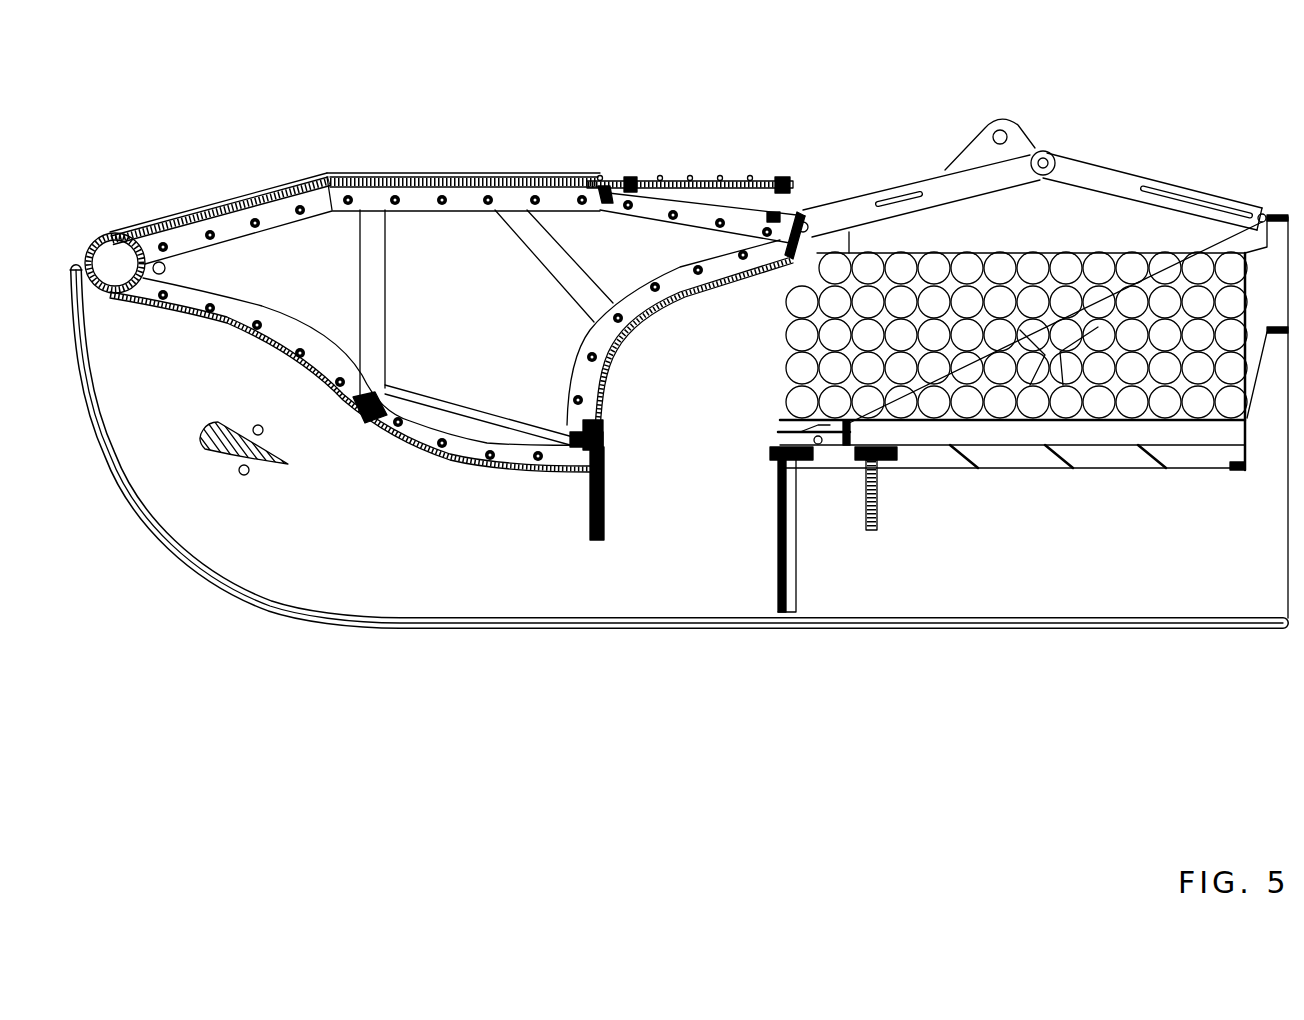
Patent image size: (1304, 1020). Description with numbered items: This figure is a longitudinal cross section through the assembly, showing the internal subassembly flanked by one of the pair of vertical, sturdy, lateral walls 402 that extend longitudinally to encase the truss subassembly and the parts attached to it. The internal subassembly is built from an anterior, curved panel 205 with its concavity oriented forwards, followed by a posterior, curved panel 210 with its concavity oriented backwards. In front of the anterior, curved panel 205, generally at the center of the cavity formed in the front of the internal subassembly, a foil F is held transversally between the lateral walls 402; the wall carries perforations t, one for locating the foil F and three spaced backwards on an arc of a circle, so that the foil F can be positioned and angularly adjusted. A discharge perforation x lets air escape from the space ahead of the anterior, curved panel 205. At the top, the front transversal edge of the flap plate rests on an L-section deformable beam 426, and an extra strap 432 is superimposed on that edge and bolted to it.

The discharge perforation x is at (166, 266).
The L-section deformable beam 426 is at (600, 183).
The extra strap 432 is at (788, 213).
The anterior curved panel 205 is at (218, 327).
The foil F is at (240, 452).
The perforation t is at (246, 474).
The lateral wall 402 is at (428, 532).
The posterior curved panel 210 is at (600, 393).